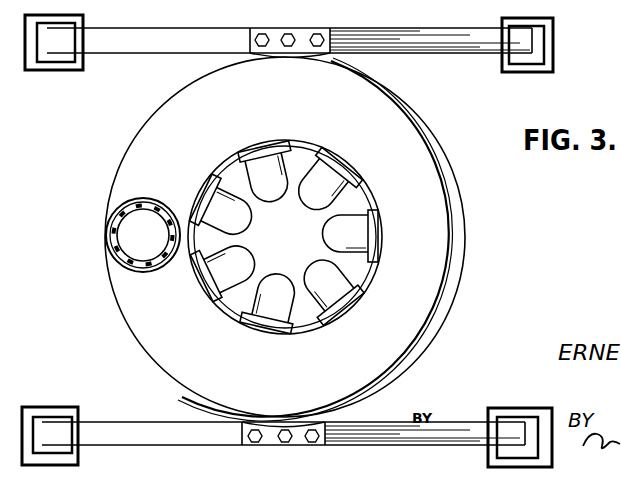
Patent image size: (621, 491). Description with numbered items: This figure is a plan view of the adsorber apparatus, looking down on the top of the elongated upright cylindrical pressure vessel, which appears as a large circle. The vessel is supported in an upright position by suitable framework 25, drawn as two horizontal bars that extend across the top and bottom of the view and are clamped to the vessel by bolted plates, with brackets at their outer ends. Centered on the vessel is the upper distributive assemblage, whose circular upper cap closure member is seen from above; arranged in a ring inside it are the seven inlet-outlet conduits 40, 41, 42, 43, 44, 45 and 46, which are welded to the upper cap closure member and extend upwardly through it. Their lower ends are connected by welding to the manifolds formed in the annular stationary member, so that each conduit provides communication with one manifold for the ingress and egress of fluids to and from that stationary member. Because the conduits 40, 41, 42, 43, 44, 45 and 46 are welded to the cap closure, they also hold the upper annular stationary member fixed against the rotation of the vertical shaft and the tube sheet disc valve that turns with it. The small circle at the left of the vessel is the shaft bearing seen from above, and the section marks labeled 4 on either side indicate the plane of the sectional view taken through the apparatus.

The section line 4- 4 is at (72, 211).
The framework 25 is at (153, 59).
The inlet-outlet conduit 40 is at (374, 236).
The inlet-outlet conduit 41 is at (338, 170).
The inlet-outlet conduit 42 is at (268, 153).
The inlet-outlet conduit 43 is at (208, 198).
The inlet-outlet conduit 44 is at (217, 298).
The inlet-outlet conduit 45 is at (288, 330).
The inlet-outlet conduit 46 is at (350, 305).